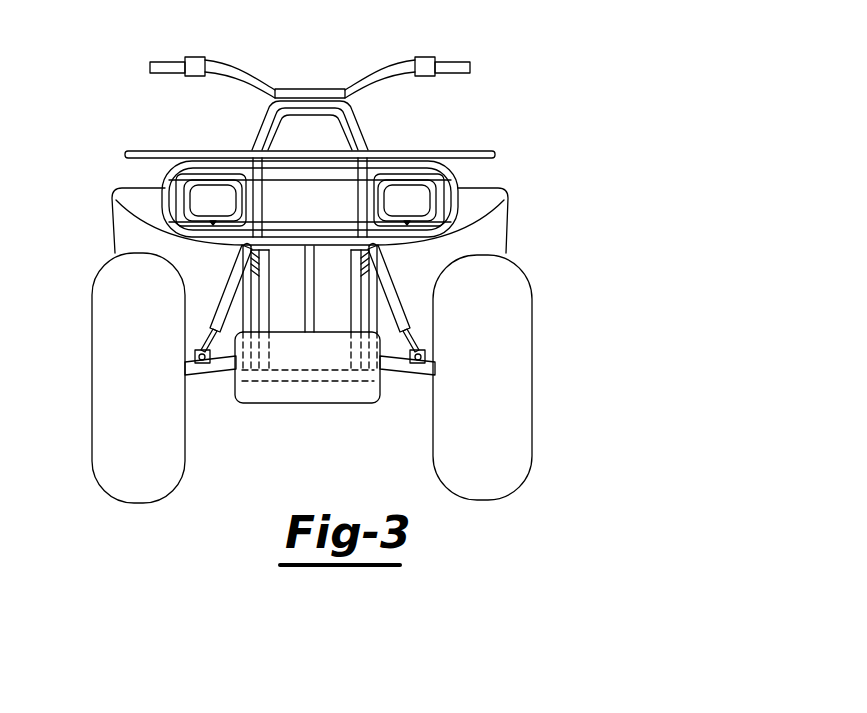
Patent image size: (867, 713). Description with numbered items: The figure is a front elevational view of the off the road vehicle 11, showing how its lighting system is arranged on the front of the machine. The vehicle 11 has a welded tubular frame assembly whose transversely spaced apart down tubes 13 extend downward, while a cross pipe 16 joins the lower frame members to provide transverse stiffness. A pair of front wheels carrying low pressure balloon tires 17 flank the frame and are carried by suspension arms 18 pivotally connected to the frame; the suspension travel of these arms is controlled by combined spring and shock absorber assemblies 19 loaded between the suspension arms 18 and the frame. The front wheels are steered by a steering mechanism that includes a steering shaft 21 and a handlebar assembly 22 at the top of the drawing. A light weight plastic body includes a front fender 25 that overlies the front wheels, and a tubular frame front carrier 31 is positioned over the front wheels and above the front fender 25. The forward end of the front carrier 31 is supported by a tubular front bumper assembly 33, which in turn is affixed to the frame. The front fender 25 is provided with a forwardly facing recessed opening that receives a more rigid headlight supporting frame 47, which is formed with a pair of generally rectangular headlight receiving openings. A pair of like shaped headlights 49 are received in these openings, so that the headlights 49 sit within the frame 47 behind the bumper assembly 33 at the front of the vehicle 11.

The off the road vehicle 11 is at (475, 143).
The down tubes 13 is at (268, 287).
The cross pipe 16 is at (317, 381).
The balloon tires 17 is at (92, 464).
The suspension arms 18 is at (202, 375).
The combined spring and shock absorber assemblies 19 is at (226, 290).
The steering shaft 21 is at (314, 300).
The handlebar assembly 22 is at (387, 60).
The front fender 25 is at (507, 195).
The front carrier 31 is at (157, 151).
The front bumper assembly 33 is at (460, 193).
The headlight supporting frame 47 is at (222, 174).
The headlights 49 is at (198, 195).